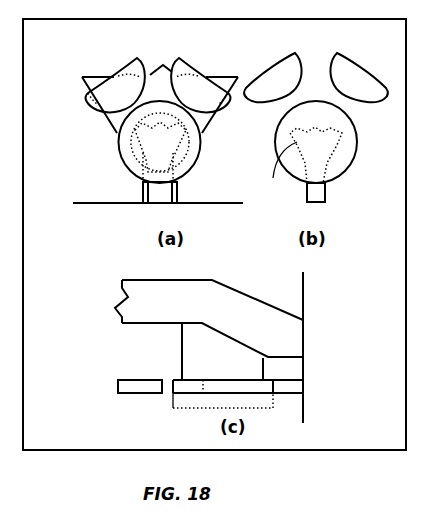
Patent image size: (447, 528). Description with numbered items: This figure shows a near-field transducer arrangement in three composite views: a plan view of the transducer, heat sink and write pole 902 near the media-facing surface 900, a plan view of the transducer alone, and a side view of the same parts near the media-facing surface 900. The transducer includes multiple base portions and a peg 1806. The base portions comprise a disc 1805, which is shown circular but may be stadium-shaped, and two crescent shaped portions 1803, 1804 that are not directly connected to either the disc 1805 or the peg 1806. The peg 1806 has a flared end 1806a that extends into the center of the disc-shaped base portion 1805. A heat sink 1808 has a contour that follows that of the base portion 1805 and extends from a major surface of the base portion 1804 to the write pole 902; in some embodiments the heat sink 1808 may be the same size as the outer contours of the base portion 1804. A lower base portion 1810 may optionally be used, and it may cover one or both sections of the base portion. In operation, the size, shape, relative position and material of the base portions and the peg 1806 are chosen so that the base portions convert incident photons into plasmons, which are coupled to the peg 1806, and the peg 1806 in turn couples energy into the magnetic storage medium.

The media-facing surface 900 is at (110, 204).
The write pole 902 is at (103, 75).
The crescent shaped portion 1803 is at (137, 58).
The crescent shaped portion 1804 is at (177, 57).
The disc 1805 is at (117, 148).
The peg 1806 is at (143, 192).
The flared end 1806a is at (267, 171).
The heat sink 1808 is at (138, 120).
The lower base portion 1810 is at (173, 402).